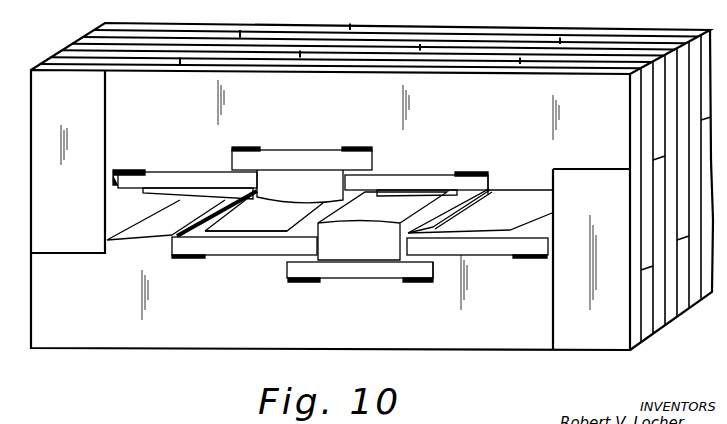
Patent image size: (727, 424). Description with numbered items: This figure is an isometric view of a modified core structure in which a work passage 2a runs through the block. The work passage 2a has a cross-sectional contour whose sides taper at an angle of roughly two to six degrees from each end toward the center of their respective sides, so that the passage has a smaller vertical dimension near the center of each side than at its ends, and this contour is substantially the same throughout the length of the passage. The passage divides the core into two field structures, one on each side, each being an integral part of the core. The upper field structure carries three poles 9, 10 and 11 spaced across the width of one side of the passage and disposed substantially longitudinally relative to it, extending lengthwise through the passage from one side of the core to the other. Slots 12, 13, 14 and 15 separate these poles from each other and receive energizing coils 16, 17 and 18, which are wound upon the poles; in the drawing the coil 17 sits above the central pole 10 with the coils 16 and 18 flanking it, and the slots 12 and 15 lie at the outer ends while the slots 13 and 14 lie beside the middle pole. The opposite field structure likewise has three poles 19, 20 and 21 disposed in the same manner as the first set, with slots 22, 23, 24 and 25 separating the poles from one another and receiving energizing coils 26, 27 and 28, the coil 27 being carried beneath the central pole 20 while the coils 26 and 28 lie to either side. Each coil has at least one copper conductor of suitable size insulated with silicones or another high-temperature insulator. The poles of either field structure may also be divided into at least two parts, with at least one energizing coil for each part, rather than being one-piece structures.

The work passage 2a is at (528, 197).
The pole 9 is at (205, 197).
The pole 10 is at (313, 202).
The pole 11 is at (385, 194).
The slot 12 is at (126, 169).
The slot 13 is at (256, 148).
The slot 14 is at (370, 149).
The slot 15 is at (486, 171).
The energizing coil 16 is at (430, 178).
The energizing coil 17 is at (303, 159).
The energizing coil 18 is at (168, 180).
The pole 19 is at (263, 237).
The pole 20 is at (380, 226).
The pole 21 is at (460, 256).
The slot 22 is at (189, 259).
The slot 23 is at (312, 283).
The slot 24 is at (425, 283).
The slot 25 is at (537, 262).
The energizing coil 26 is at (248, 254).
The energizing coil 27 is at (370, 279).
The energizing coil 28 is at (498, 252).